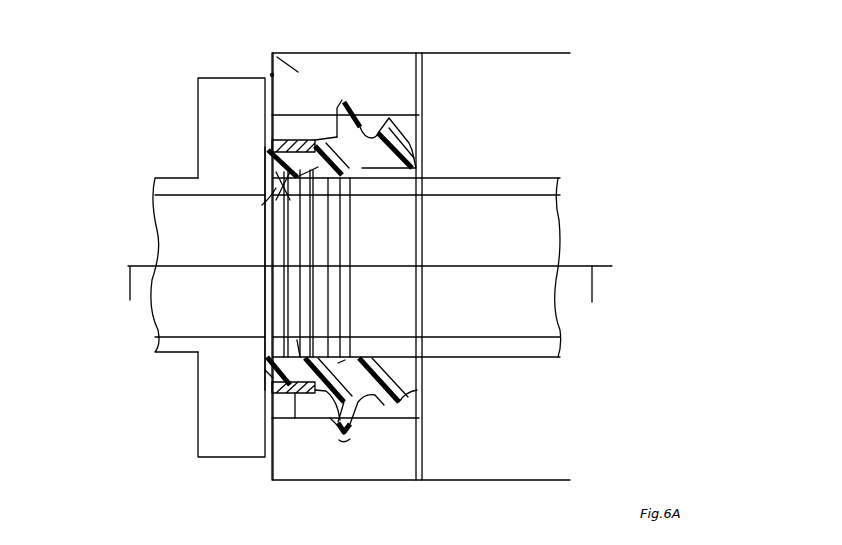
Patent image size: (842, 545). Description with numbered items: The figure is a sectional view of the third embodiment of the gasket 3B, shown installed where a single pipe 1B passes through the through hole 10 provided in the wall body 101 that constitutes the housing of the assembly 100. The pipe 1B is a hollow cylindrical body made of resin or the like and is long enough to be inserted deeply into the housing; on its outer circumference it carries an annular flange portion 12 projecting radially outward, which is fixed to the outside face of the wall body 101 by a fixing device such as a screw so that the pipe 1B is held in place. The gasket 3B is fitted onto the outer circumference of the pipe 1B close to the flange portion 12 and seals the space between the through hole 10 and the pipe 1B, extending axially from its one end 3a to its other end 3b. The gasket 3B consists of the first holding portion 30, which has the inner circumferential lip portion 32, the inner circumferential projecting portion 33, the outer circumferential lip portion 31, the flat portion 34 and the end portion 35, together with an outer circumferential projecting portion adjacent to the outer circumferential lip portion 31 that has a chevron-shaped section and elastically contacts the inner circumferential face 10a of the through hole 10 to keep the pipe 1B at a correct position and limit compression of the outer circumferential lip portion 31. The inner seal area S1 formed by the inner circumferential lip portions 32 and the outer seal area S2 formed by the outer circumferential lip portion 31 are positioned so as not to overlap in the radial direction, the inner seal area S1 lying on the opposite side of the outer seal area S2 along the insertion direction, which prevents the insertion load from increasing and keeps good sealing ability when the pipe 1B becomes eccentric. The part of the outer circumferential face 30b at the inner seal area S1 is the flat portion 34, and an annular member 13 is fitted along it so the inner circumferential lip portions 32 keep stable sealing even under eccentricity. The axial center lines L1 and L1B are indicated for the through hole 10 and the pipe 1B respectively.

The bearing device 100 is at (270, 75).
The wall body 101 is at (272, 50).
The through hole 10 is at (267, 128).
The inner circumferential face of the through hole 10a is at (420, 128).
The flange portion 12 is at (198, 144).
The annular member 13 is at (295, 394).
The pipe 1B is at (126, 168).
The gasket 3B is at (352, 75).
The one end of the gasket 3a is at (417, 297).
The other end of the gasket 3b is at (263, 333).
The first holding portion 30 is at (272, 455).
The outer circumferential face 30b is at (303, 140).
The outer circumferential lip portion 31 is at (334, 428).
The inner circumferential lip portion 32 is at (275, 182).
The inner circumferential projecting portion 33 is at (348, 360).
The flat portion 34 is at (270, 403).
The end portion 35 is at (268, 375).
The inner seal area S1 is at (299, 338).
The outer seal area S2 is at (346, 450).
The axis line L1 is at (368, 293).
The axis line L1B is at (590, 293).